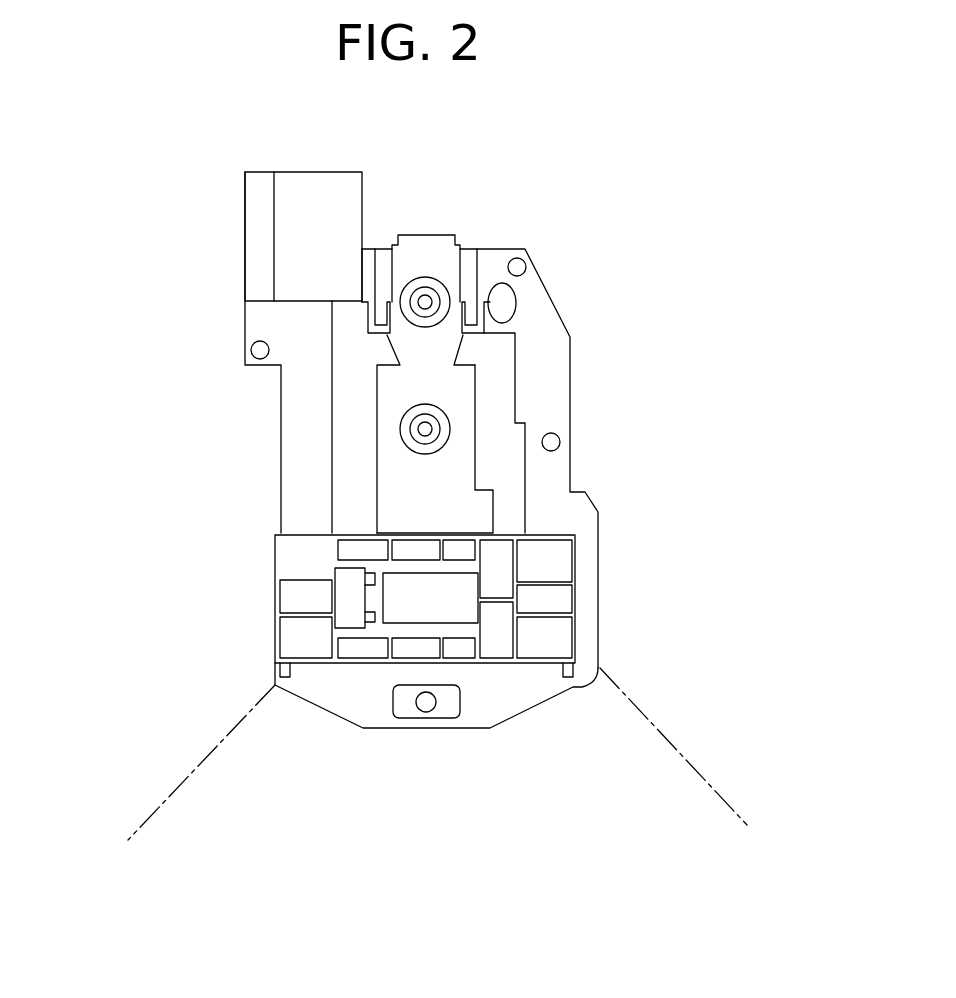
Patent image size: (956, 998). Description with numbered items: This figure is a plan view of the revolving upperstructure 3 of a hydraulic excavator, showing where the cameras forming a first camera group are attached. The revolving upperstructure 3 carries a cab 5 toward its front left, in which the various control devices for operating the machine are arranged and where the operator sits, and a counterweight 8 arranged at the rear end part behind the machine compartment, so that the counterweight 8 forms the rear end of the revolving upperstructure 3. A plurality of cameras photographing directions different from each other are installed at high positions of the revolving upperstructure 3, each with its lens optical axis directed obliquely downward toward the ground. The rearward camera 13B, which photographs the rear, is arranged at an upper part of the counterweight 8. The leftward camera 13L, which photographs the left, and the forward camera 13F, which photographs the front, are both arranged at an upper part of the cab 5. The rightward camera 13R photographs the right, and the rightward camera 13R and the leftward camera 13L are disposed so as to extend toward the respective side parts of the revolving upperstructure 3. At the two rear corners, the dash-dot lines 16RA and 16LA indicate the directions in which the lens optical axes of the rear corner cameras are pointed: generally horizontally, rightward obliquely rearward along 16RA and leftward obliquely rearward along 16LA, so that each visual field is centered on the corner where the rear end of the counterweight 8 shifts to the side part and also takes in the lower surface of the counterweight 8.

The revolving upperstructure 3 is at (571, 390).
The cab 5 is at (302, 188).
The counterweight 8 is at (523, 700).
The forward camera 13F is at (519, 260).
The leftward camera 13L is at (259, 351).
The rightward camera 13R is at (560, 442).
The rearward camera 13B is at (426, 705).
The optical axis direction of camera 16L 16LA is at (150, 815).
The optical axis direction of camera 16R 16RA is at (722, 795).